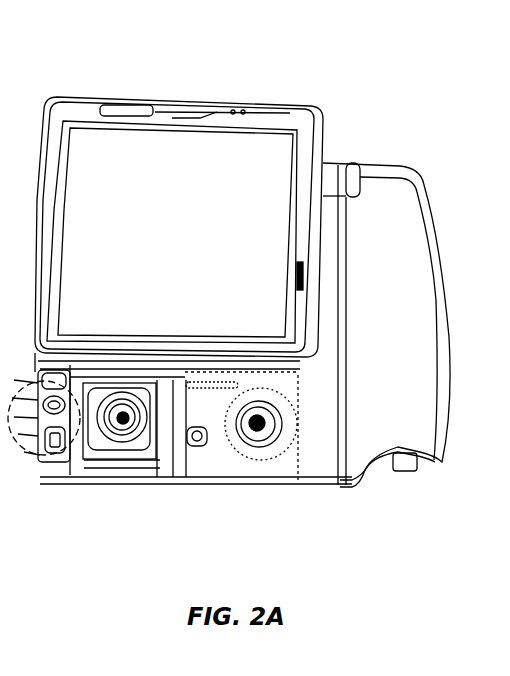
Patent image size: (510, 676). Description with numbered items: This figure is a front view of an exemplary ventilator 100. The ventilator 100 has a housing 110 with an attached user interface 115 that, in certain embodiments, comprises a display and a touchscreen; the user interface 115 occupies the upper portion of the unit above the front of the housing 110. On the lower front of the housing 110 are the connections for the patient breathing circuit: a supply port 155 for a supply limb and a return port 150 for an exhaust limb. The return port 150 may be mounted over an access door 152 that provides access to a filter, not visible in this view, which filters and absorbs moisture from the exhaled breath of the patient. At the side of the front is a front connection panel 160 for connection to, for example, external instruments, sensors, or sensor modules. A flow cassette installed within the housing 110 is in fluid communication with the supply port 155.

The ventilator 100 is at (208, 62).
The housing 110 is at (392, 213).
The user interface 115 is at (121, 178).
The return port 150 is at (123, 437).
The access door 152 is at (158, 452).
The supply port 155 is at (258, 430).
The front connection panel 160 is at (47, 470).